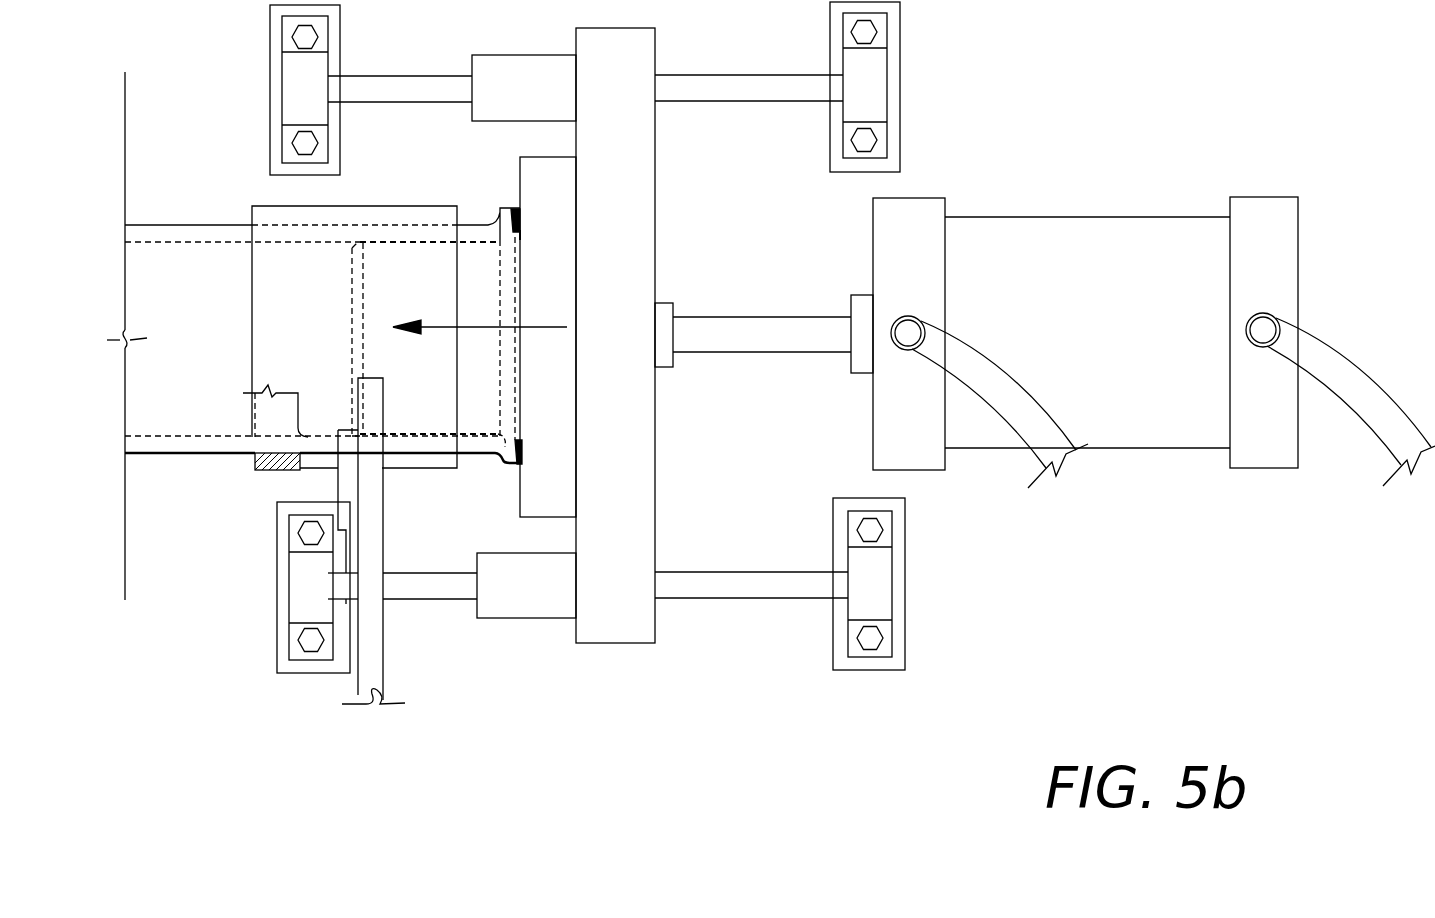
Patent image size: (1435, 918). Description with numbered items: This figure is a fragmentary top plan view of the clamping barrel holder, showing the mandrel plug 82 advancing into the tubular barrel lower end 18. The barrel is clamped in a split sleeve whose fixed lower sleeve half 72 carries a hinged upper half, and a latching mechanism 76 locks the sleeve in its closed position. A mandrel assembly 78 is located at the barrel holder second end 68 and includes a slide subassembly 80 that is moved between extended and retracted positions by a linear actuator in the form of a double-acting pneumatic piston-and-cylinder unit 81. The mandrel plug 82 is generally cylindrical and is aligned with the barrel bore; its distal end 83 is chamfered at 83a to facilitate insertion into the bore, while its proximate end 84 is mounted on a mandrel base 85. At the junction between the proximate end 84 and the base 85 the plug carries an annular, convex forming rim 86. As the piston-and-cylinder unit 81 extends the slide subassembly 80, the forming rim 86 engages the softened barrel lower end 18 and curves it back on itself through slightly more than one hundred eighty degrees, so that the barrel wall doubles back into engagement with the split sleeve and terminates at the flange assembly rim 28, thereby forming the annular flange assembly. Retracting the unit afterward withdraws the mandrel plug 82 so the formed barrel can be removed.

The tubular barrel lower end 18 is at (519, 246).
The flange assembly rim 28 is at (523, 465).
The barrel holder second end 68 is at (1298, 197).
The lower sleeve half 72 is at (255, 470).
The latching mechanism 76 is at (337, 482).
The mandrel assembly 78 is at (460, 156).
The slide subassembly 80 is at (657, 645).
The piston-and-cylinder unit 81 is at (1147, 337).
The mandrel plug 82 is at (497, 393).
The distal end 83 is at (352, 283).
The chamfer 83a is at (363, 327).
The proximate end 84 is at (522, 291).
The mandrel base 85 is at (522, 516).
The forming rim 86 is at (512, 232).